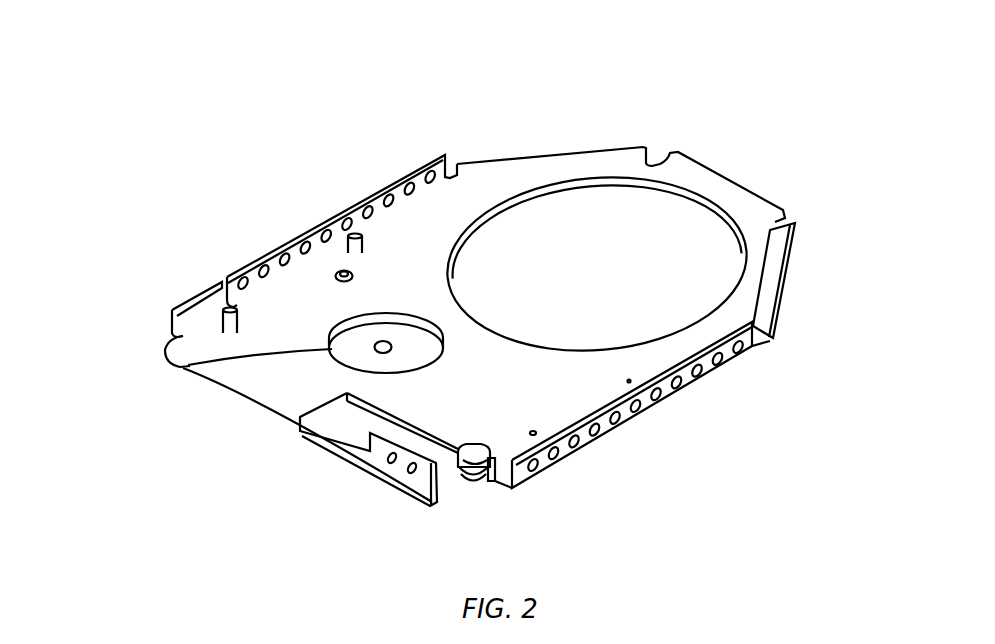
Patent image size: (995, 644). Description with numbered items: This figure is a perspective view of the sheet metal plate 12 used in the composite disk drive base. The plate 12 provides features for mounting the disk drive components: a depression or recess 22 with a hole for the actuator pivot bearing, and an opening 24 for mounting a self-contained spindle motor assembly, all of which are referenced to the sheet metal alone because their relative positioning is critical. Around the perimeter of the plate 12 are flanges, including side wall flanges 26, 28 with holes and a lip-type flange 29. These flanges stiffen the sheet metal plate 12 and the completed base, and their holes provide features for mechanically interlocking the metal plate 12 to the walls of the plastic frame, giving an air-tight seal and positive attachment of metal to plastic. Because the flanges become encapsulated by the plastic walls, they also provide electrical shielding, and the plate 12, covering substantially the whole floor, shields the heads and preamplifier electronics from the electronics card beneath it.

The sheet metal plate 12 is at (530, 92).
The depression or recess 22 is at (183, 365).
The opening 24 is at (612, 238).
The side wall flange 26 is at (310, 227).
The side wall flange 28 is at (627, 417).
The lip-type flange 29 is at (770, 290).